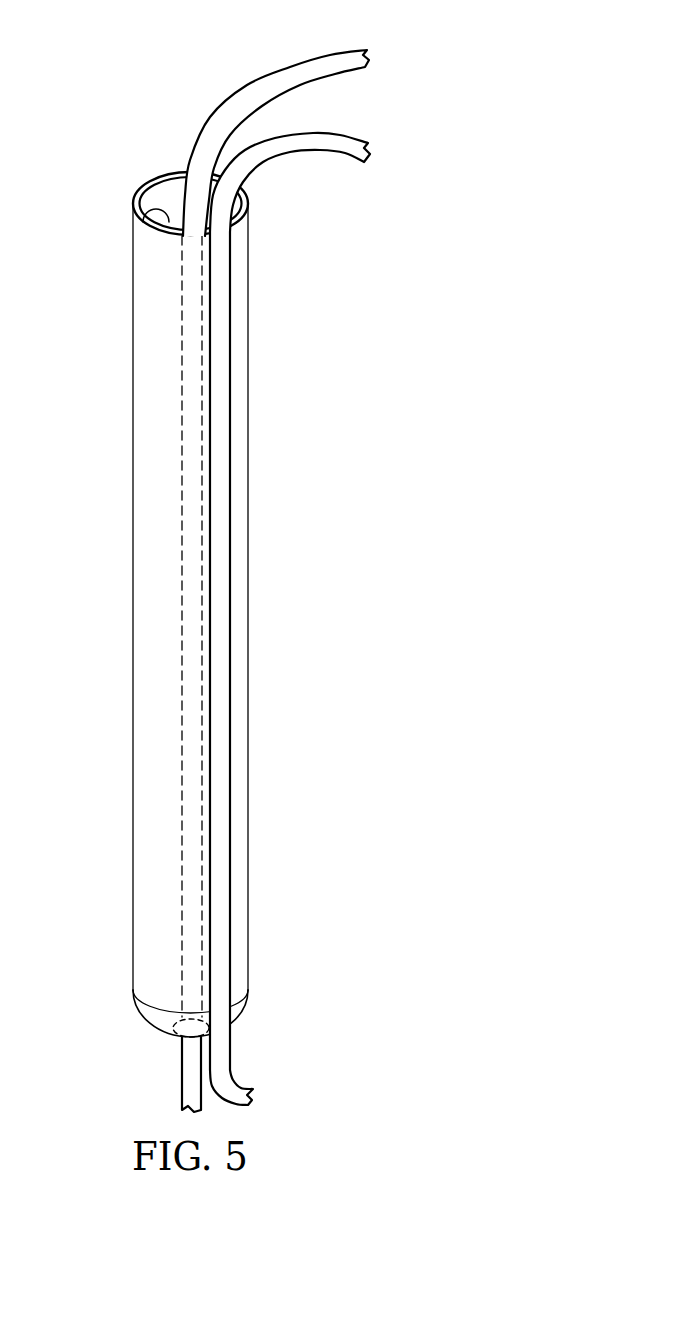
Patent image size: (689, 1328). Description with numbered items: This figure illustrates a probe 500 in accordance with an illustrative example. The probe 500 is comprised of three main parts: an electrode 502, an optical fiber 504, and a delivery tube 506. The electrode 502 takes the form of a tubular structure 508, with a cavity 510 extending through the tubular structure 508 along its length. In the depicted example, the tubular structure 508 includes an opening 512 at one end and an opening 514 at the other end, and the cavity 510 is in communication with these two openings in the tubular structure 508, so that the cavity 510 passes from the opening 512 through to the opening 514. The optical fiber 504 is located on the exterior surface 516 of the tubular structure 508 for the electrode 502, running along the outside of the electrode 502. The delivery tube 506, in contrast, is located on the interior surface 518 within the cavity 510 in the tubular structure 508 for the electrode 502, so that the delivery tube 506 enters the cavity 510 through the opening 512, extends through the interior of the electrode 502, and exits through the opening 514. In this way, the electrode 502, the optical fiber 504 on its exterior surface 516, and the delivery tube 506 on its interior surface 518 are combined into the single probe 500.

The probe 500 is at (122, 74).
The electrode 502 is at (121, 590).
The optical fiber 504 is at (290, 157).
The delivery tube 506 is at (242, 92).
The tubular structure 508 is at (132, 733).
The cavity 510 is at (167, 192).
The opening 512 is at (143, 185).
The opening 514 is at (176, 1040).
The exterior surface 516 is at (147, 437).
The interior surface 518 is at (143, 222).